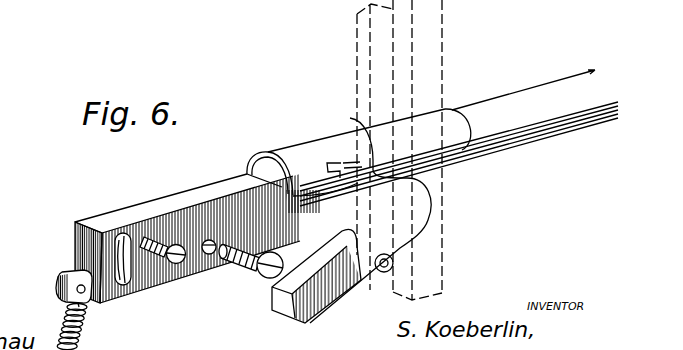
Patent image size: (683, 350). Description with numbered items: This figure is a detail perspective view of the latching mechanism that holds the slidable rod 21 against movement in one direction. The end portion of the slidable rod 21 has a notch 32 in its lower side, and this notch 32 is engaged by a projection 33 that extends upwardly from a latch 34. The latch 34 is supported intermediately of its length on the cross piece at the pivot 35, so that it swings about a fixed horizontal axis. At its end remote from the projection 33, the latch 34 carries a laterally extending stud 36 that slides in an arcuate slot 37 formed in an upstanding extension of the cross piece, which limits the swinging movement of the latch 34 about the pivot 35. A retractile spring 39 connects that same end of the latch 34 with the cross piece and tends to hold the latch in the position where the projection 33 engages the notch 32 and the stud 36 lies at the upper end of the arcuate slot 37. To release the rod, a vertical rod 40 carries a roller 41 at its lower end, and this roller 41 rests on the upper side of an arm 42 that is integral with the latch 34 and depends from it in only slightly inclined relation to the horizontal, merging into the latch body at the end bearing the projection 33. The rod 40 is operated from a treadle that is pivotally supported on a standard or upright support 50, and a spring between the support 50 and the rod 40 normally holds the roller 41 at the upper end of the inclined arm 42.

The slidable rod 21 is at (517, 93).
The notch 32 is at (335, 169).
The projection 33 is at (370, 215).
The latch 34 is at (226, 213).
The pivot 35 is at (270, 278).
The stud 36 is at (180, 275).
The arcuate slot 37 is at (127, 285).
The retractile spring 39 is at (85, 330).
The rod 40 is at (371, 69).
The roller 41 is at (384, 273).
The arm 42 is at (308, 324).
The standard or upright support 50 is at (428, 53).